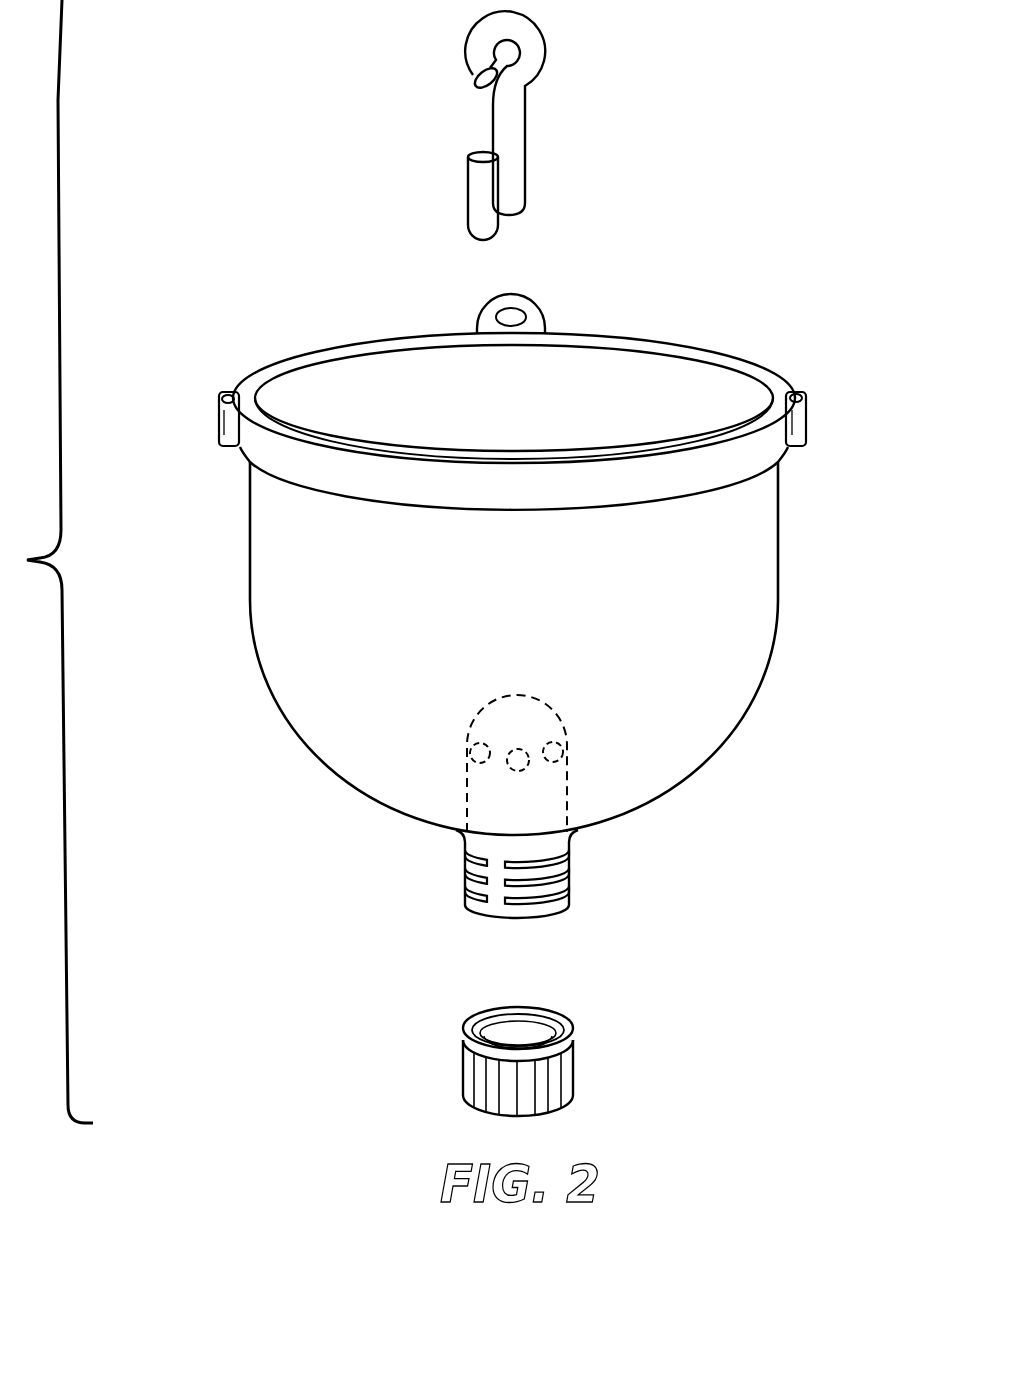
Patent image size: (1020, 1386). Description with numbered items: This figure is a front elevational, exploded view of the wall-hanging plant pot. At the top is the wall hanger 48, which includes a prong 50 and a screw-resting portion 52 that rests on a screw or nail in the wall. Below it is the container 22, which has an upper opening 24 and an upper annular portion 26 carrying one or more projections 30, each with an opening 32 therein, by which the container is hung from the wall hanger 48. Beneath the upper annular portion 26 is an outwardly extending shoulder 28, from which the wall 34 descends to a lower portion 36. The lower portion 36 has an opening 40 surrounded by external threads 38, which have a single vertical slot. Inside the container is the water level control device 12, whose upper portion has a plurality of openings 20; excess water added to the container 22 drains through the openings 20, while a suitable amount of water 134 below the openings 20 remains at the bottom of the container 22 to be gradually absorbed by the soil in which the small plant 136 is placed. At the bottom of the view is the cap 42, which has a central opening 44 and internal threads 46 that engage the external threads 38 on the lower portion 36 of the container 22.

The water level control device 12 is at (455, 790).
The openings 20 is at (561, 757).
The container 22 is at (205, 581).
The upper opening 24 is at (620, 348).
The upper annular portion 26 is at (280, 463).
The outwardly extending shoulder 28 is at (780, 460).
The projection 30 is at (528, 305).
The opening 32 is at (505, 318).
The wall 34 is at (778, 568).
The lower portion 36 is at (610, 820).
The external threads 38 is at (465, 885).
The opening 40 is at (532, 918).
The cap 42 is at (445, 1047).
The central opening 44 is at (500, 1010).
The internal threads 46 is at (570, 1038).
The wall hanger 48 is at (416, 99).
The prong 50 is at (477, 172).
The screw-resting portion 52 is at (497, 28).
The water 134 is at (798, 418).
The small plant 136 is at (796, 392).